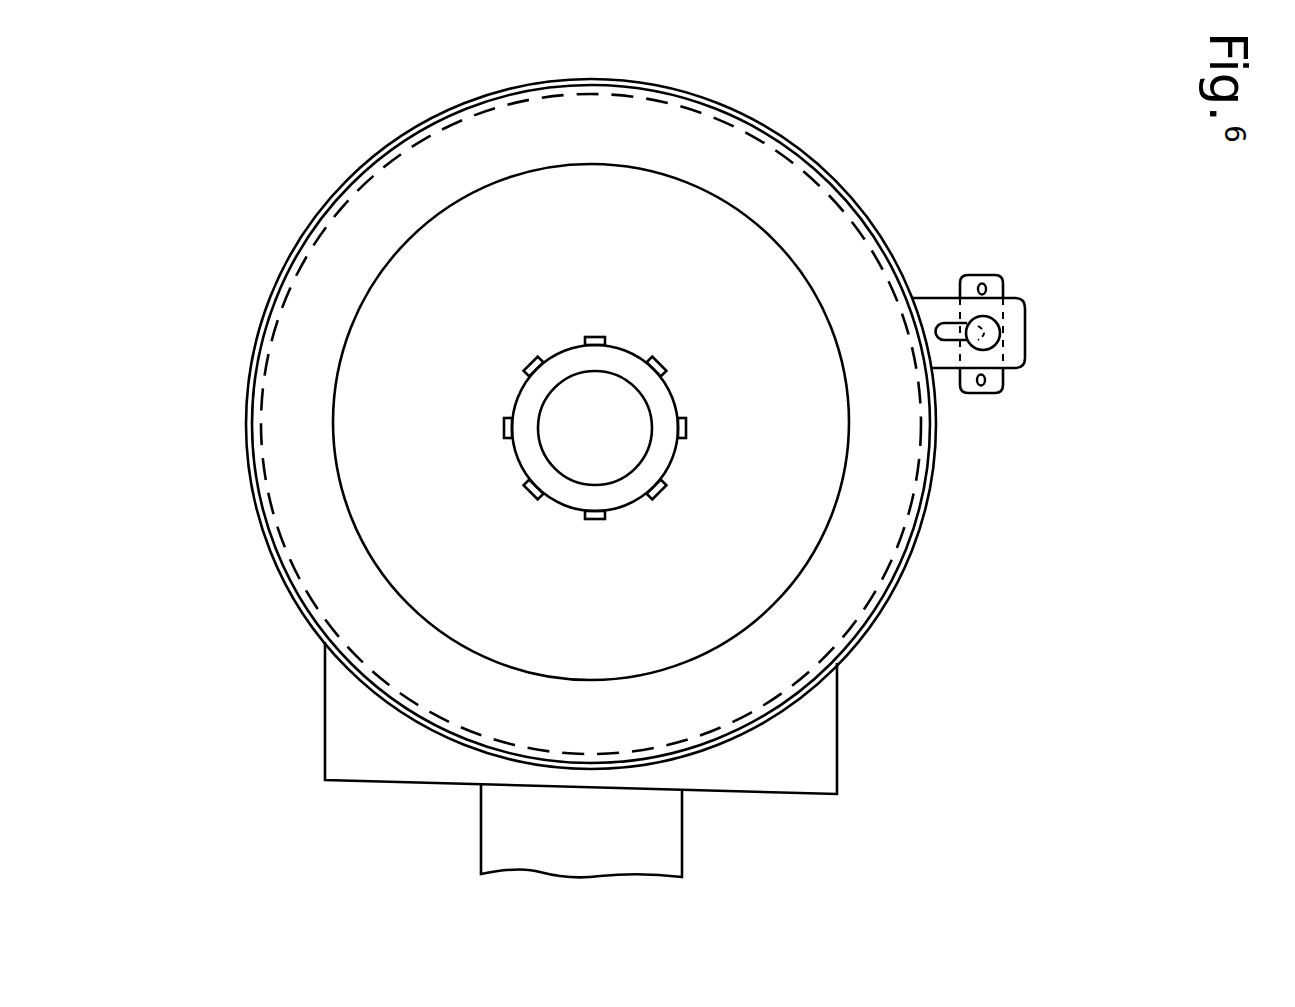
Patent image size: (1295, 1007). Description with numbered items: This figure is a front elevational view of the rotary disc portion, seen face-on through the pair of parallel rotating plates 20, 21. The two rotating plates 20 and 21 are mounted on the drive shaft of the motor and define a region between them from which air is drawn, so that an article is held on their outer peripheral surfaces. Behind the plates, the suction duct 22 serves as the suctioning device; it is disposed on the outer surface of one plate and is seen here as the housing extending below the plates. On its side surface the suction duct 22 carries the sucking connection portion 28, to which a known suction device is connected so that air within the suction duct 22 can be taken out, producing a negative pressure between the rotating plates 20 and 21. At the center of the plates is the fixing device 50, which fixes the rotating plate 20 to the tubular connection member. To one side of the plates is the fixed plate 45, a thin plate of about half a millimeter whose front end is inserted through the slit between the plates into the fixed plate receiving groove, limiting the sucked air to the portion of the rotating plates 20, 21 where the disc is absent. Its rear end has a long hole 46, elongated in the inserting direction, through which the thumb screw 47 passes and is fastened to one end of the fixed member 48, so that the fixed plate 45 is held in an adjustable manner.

The rotating plate 20 is at (765, 158).
The rotating plate 21 is at (591, 424).
The suction duct 22 is at (822, 750).
The sucking connection portion 28 is at (670, 833).
The fixed plate 45 is at (1022, 360).
The long hole 46 is at (943, 328).
The thumb screw 47 is at (1000, 333).
The fixed member 48 is at (1000, 285).
The fixing device 50 is at (660, 400).